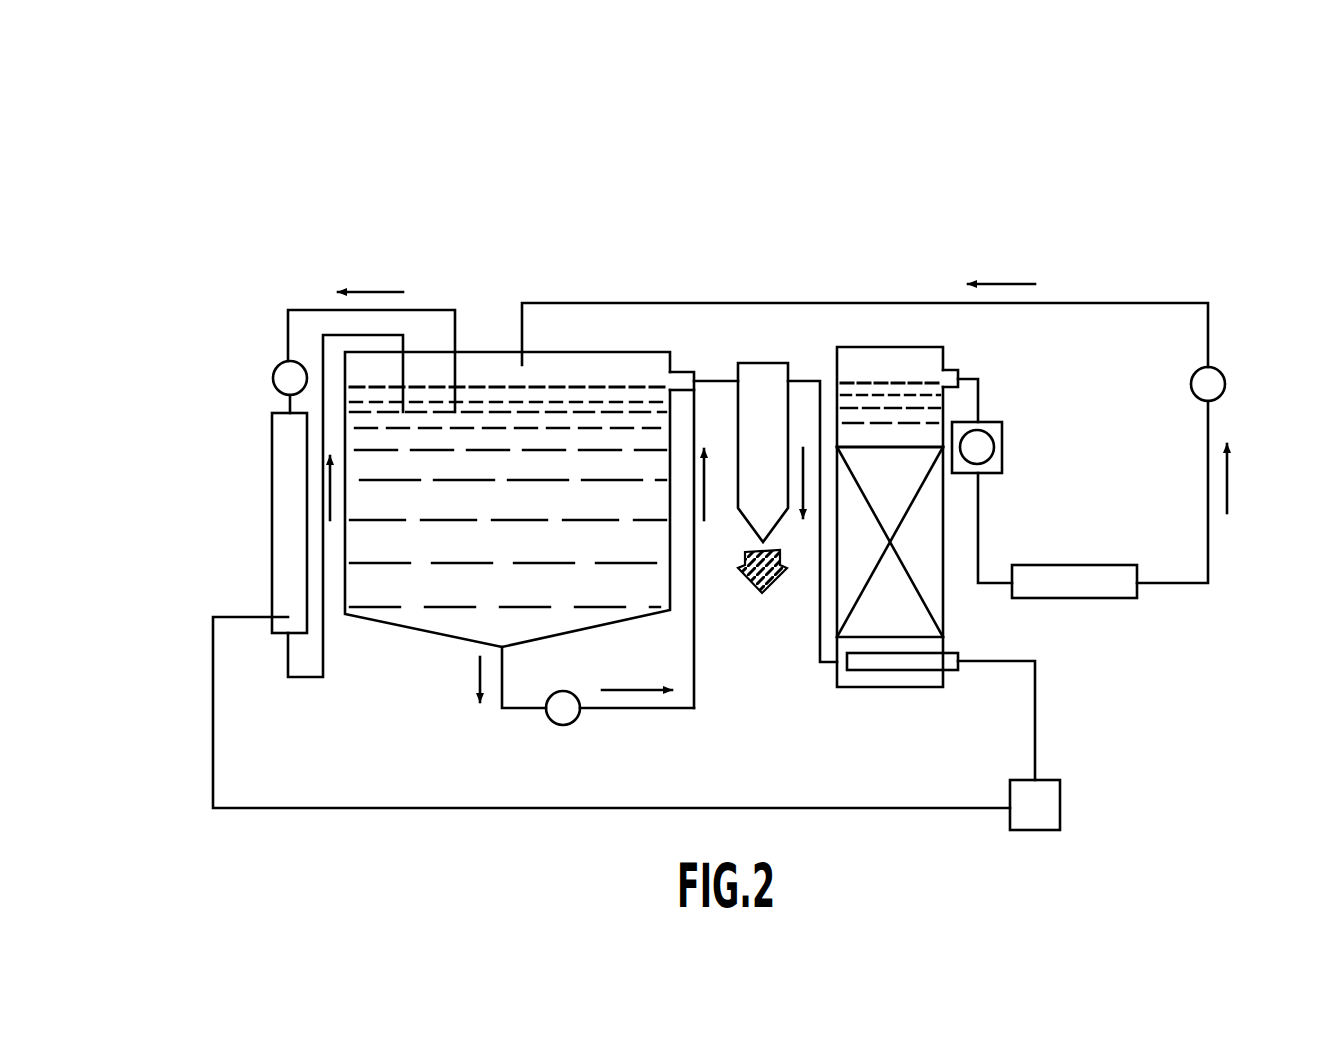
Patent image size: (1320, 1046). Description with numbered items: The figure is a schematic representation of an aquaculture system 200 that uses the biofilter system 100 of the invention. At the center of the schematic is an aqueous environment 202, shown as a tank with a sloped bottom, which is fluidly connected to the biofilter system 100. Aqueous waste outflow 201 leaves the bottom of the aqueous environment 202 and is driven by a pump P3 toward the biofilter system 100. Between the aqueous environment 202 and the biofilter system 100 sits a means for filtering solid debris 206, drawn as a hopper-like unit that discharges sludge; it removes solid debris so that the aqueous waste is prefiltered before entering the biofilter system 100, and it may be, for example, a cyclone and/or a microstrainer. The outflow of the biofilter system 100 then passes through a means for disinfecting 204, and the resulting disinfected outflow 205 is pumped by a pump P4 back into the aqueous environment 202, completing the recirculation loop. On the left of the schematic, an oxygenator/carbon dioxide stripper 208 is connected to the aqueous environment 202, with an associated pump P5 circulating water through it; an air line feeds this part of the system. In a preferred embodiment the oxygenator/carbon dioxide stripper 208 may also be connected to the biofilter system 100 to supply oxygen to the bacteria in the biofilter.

The aquaculture system 200 is at (739, 224).
The biofilter system 100 is at (915, 629).
The aqueous waste outflow 201 is at (514, 677).
The aqueous environment 202 is at (515, 578).
The means for disinfecting 204 is at (1138, 600).
The disinfected outflow 205 is at (1207, 492).
The means for filtering solid debris 206 is at (763, 362).
The oxygenator/carbon dioxide stripper 208 is at (271, 539).
The pump P3 is at (620, 719).
The pump P4 is at (1224, 371).
The pump P5 is at (272, 387).